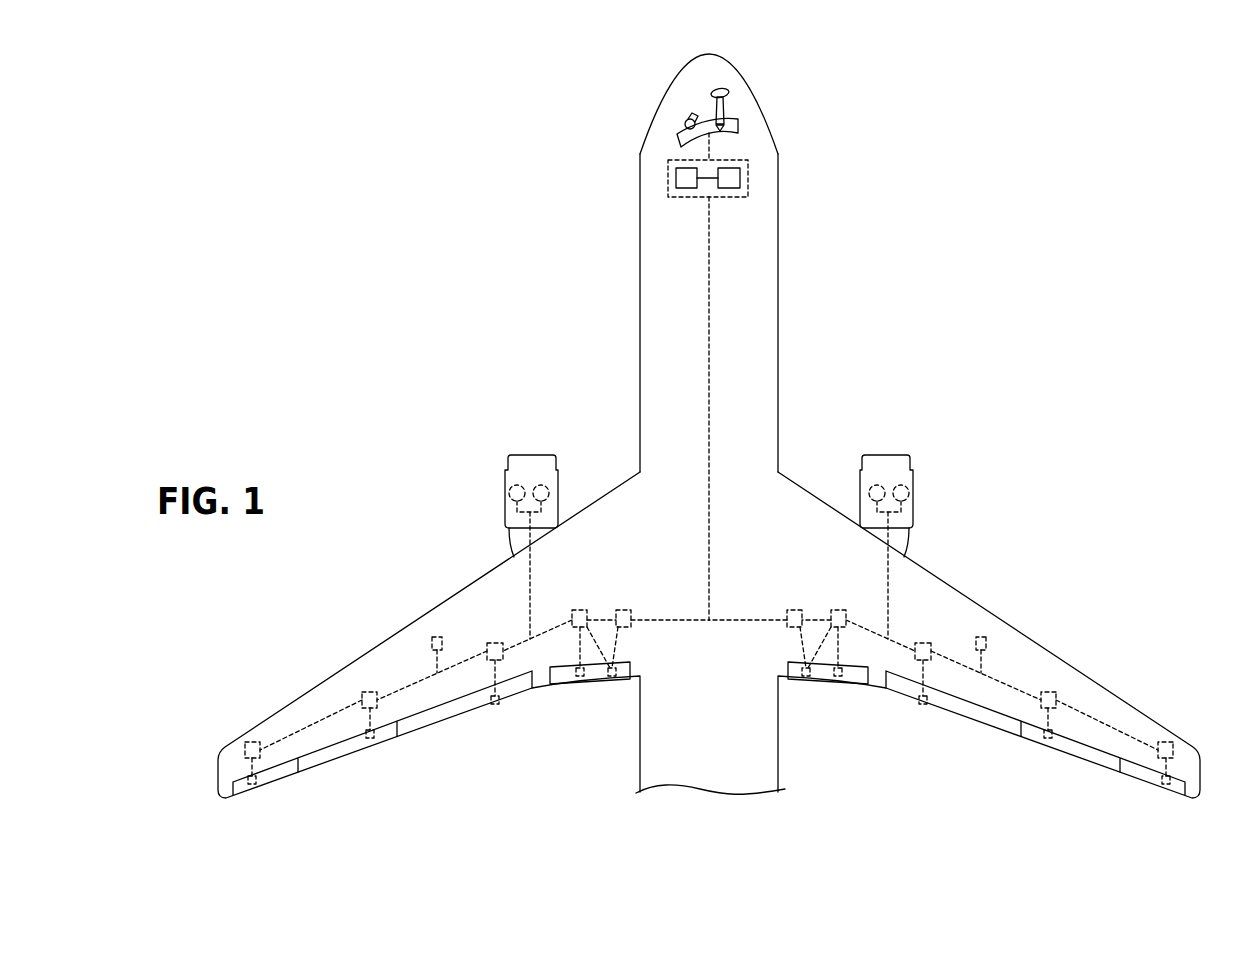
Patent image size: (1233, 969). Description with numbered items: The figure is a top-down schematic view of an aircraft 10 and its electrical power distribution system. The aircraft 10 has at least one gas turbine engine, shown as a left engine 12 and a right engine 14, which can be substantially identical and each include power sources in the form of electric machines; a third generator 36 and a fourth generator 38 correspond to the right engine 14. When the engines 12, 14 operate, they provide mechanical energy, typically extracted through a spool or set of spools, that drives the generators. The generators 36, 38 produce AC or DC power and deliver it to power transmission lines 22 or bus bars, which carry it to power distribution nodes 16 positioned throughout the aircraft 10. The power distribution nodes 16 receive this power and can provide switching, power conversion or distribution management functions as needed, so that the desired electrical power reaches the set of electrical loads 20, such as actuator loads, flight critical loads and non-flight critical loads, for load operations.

The aircraft 10 is at (546, 82).
The left engine 12 is at (531, 462).
The right engine 14 is at (884, 462).
The power distribution nodes 16 is at (272, 772).
The electrical loads 20 is at (680, 190).
The power transmission lines 22 is at (709, 355).
The third generator 36 is at (508, 497).
The fourth generator 38 is at (560, 490).